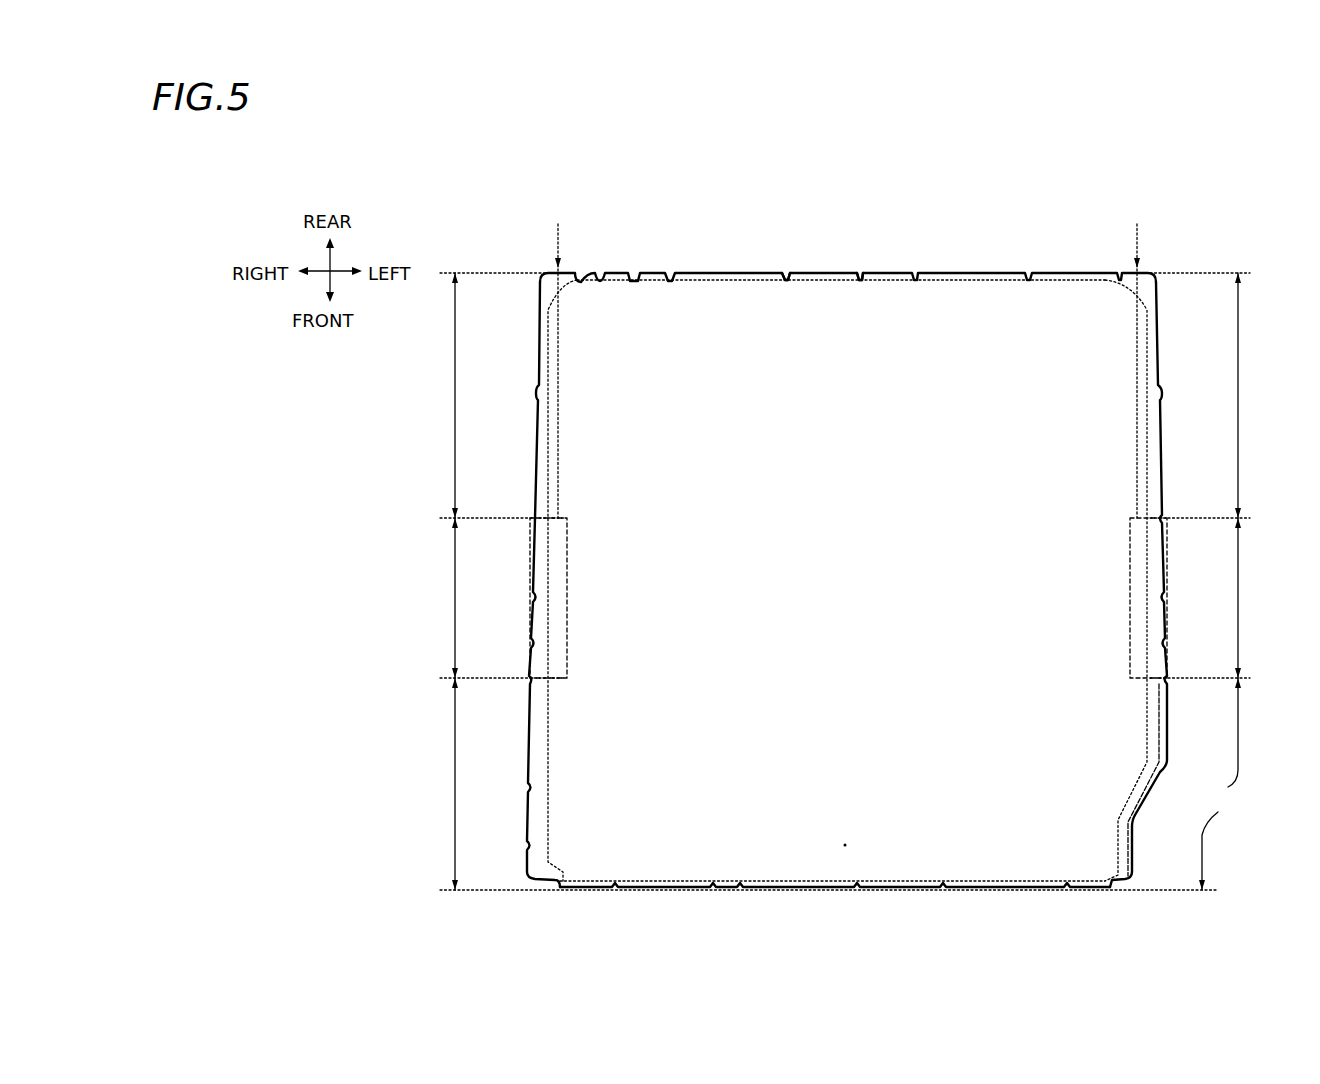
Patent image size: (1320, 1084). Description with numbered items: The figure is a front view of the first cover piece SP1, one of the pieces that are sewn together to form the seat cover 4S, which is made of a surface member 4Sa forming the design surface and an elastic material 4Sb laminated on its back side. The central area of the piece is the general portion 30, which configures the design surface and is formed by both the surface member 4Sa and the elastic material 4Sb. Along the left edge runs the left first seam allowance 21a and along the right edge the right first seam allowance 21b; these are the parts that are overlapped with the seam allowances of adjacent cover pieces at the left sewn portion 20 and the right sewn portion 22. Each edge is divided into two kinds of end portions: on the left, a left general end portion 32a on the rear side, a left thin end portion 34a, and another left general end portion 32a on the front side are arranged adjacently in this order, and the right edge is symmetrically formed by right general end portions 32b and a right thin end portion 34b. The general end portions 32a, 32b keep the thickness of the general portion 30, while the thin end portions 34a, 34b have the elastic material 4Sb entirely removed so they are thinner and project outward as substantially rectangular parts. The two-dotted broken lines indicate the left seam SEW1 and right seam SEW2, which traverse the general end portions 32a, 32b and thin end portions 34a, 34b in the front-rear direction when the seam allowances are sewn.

The general portion 30 is at (855, 584).
The first cover piece SP1 is at (848, 234).
The seat cover 4S is at (848, 277).
The surface member 4Sa is at (731, 268).
The elastic material 4Sb is at (888, 268).
The right first seam allowance 21b is at (597, 584).
The right sewn portion 22 is at (557, 466).
The left first seam allowance 21a is at (1093, 584).
The left sewn portion 20 is at (1136, 464).
The right seam SEW2 is at (558, 360).
The left seam SEW1 is at (1138, 360).
The right general end portion 32b is at (828, 581).
The right thin end portion 34b is at (503, 598).
The left general end portion 32a is at (1203, 581).
The left thin end portion 34a is at (1193, 598).